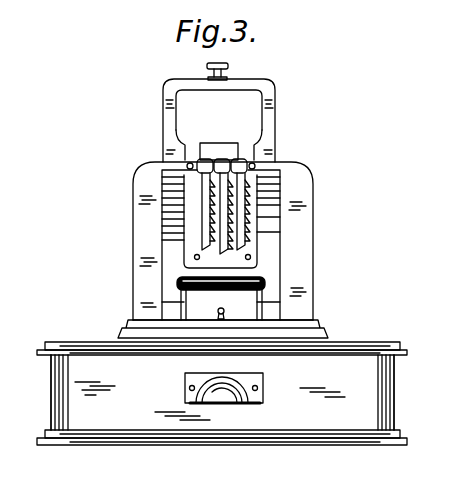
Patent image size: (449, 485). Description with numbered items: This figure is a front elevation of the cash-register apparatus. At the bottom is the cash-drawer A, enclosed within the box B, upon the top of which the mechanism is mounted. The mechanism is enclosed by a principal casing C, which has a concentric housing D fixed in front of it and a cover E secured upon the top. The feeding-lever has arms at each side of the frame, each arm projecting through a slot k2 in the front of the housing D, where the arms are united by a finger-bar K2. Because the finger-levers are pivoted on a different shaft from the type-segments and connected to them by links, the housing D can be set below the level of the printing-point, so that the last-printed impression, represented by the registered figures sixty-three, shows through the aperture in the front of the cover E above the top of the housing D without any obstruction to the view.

The cash-drawer A is at (222, 393).
The box B is at (51, 388).
The principal casing C is at (133, 218).
The concentric housing D is at (280, 240).
The cover E is at (163, 119).
The finger-bar K2 is at (265, 283).
The slot k2 is at (262, 302).